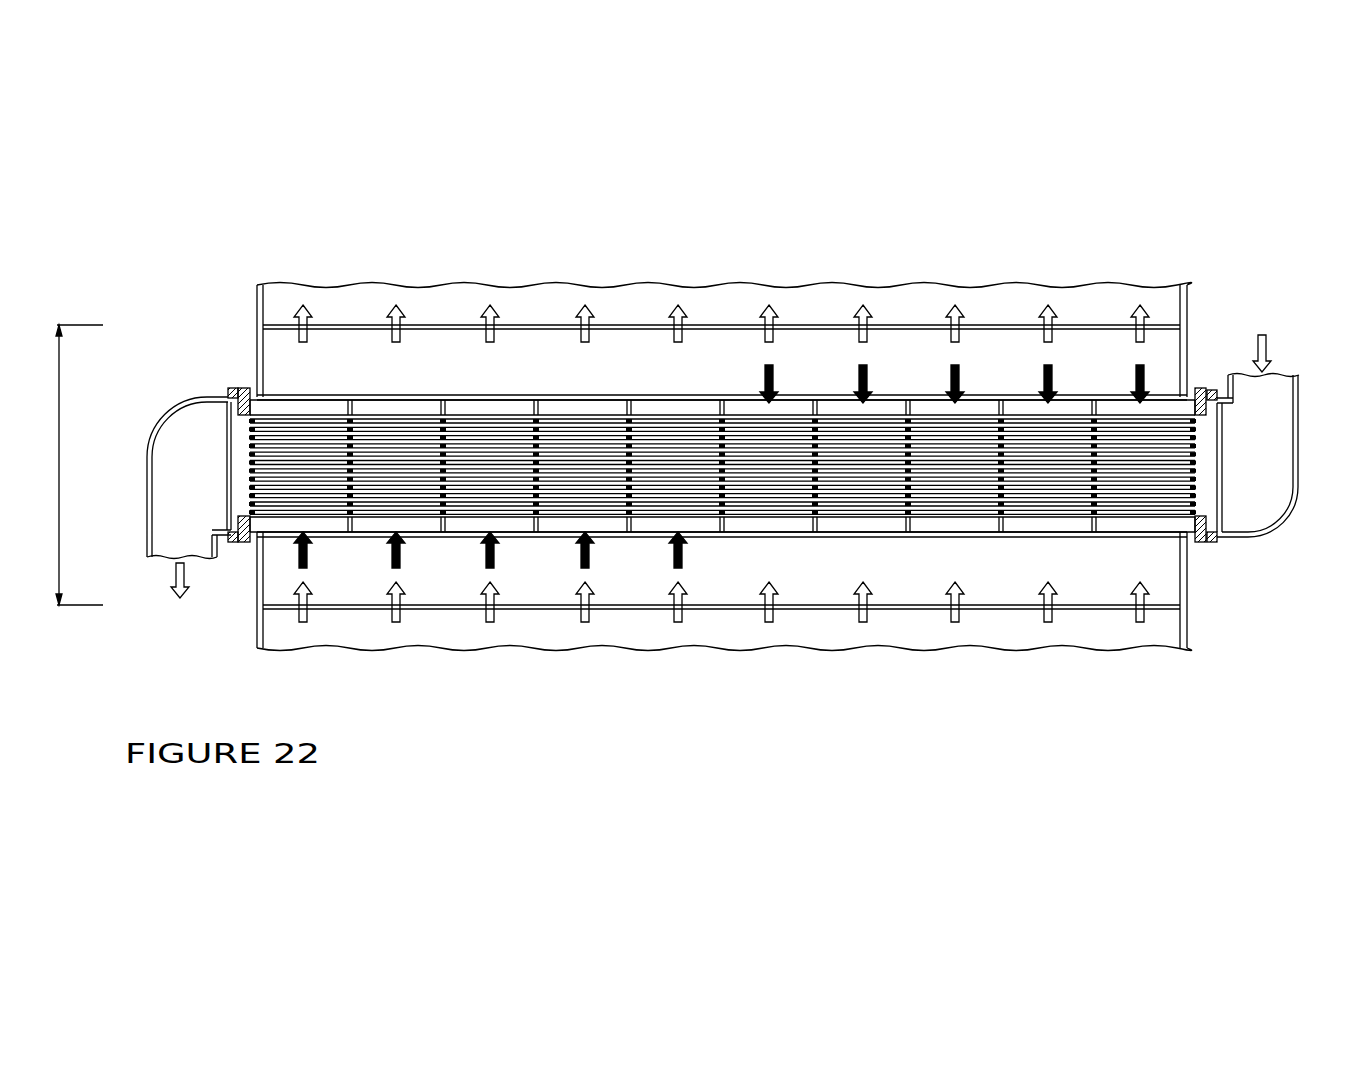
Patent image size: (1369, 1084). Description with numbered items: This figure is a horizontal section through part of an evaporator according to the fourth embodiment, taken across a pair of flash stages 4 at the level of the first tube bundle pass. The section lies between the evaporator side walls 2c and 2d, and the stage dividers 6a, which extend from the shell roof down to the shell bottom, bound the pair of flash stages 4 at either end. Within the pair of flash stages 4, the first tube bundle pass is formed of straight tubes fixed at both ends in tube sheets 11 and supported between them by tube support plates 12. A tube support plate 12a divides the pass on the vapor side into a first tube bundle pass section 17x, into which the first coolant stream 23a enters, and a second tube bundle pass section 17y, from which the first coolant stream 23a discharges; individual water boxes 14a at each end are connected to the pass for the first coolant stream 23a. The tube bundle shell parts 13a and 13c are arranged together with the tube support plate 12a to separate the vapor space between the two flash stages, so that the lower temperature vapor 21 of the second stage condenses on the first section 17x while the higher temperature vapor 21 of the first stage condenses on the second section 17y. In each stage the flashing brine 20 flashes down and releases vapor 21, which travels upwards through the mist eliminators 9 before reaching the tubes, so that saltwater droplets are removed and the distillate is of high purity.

The side wall 2c is at (256, 358).
The side wall 2d is at (1187, 633).
The pair of flash stages 4 is at (59, 475).
The stage divider 6a is at (832, 323).
The mist eliminator 9 is at (986, 371).
The tube sheet 11 is at (247, 542).
The tube support plate 12 is at (443, 398).
The tube support plate 12a is at (728, 533).
The tube bundle shell part 13a is at (610, 395).
The tube bundle shell part 13c is at (1073, 395).
The water box 14a is at (147, 525).
The first tube bundle pass section 17x is at (975, 520).
The second tube bundle pass section 17y is at (368, 406).
The flashing brine 20 is at (492, 304).
The vapor 21 is at (865, 367).
The first coolant stream 23a is at (180, 600).